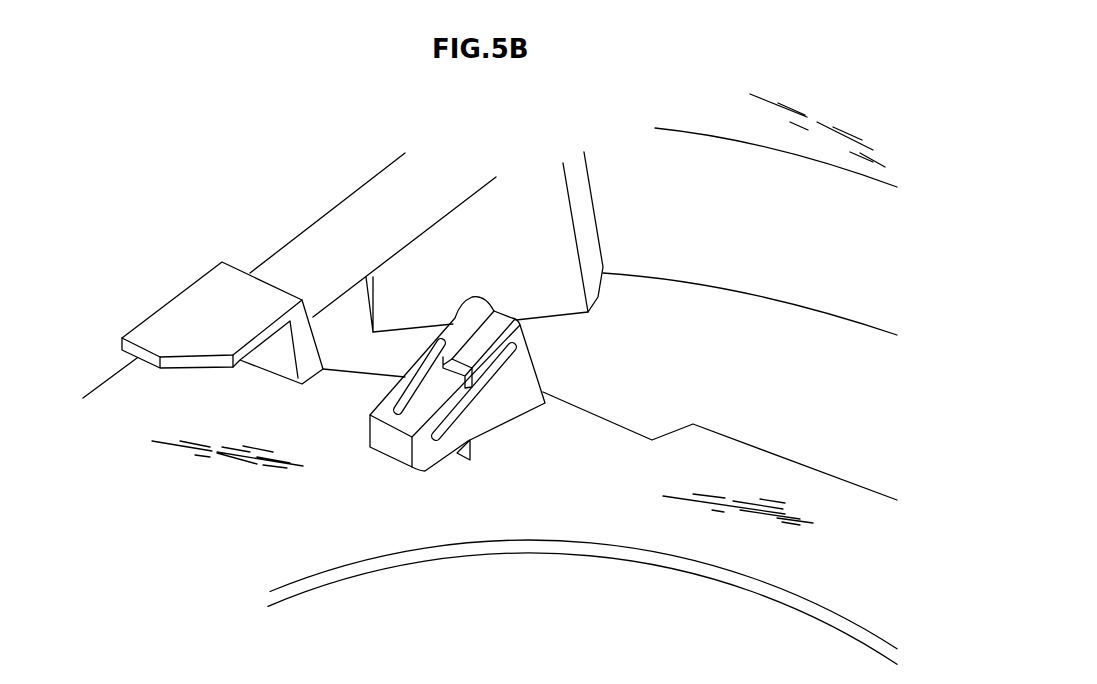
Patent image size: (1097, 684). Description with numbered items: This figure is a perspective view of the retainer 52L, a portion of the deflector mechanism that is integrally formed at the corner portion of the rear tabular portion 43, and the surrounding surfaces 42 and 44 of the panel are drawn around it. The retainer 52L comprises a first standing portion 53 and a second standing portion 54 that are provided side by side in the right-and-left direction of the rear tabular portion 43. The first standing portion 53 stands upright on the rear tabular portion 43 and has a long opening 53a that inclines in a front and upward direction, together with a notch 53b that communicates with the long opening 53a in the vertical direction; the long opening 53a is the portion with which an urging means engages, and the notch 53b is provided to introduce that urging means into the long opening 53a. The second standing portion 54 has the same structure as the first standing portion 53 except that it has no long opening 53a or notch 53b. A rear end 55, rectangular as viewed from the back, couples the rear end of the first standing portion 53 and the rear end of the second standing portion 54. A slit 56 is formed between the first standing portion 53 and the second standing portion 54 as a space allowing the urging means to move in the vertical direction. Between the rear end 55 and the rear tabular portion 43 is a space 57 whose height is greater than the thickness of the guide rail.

The upper panel 42 is at (720, 120).
The rear tabular portion 43 is at (622, 507).
The intermediate surface 44 is at (763, 380).
The retainer 52L is at (497, 490).
The first standing portion 53 is at (538, 410).
The long opening 53a is at (460, 412).
The notch 53b is at (497, 383).
The second standing portion 54 is at (487, 422).
The rear end 55 is at (390, 443).
The slit 56 is at (443, 357).
The space 57 is at (450, 463).